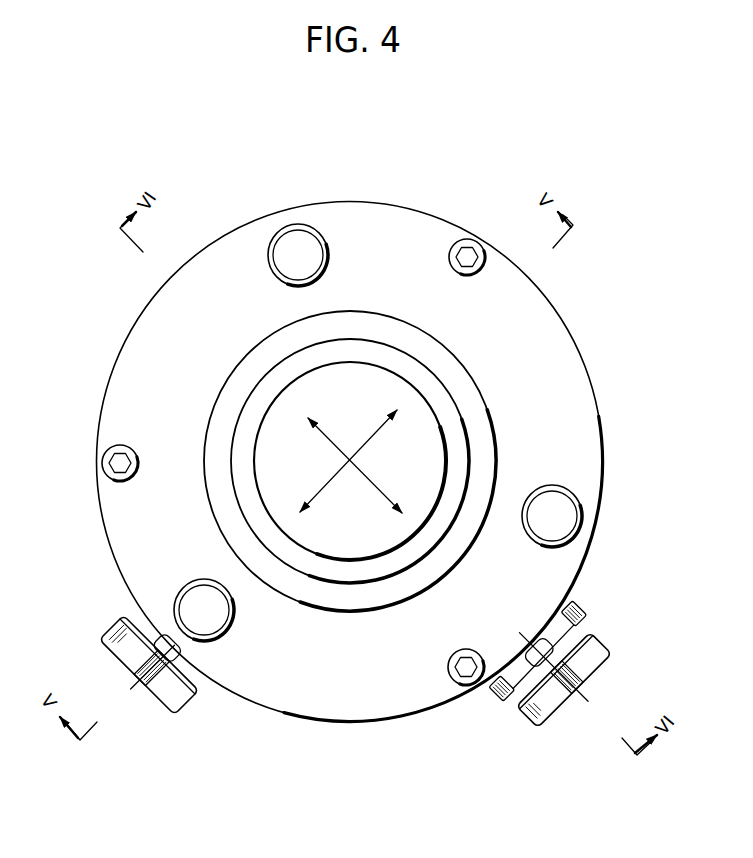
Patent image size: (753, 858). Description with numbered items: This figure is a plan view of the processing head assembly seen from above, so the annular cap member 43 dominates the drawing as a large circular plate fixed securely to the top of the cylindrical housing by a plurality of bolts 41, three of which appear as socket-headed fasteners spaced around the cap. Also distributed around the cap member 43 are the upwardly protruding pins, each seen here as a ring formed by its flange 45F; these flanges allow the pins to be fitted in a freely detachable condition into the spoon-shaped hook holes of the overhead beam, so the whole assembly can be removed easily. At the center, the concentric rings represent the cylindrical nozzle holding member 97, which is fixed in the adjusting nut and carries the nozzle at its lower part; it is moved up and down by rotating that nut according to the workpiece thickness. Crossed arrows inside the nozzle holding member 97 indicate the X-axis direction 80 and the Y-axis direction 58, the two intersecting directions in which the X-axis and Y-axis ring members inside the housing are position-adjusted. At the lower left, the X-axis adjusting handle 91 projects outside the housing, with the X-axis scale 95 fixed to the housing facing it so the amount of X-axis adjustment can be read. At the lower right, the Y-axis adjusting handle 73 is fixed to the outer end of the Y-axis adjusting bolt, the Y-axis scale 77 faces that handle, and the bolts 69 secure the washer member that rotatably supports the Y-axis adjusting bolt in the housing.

The annular cap member 43 is at (562, 336).
The nozzle holding member 97 is at (450, 417).
The X-axis direction 80 is at (372, 437).
The Y-axis direction 58 is at (383, 498).
The flange 45F is at (303, 238).
The bolts 41 is at (467, 255).
The X-axis adjusting handle 91 is at (187, 700).
The X-axis scale 95 is at (155, 678).
The Y-axis adjusting handle 73 is at (552, 718).
The Y-axis scale 77 is at (568, 668).
The bolts 69 is at (496, 703).